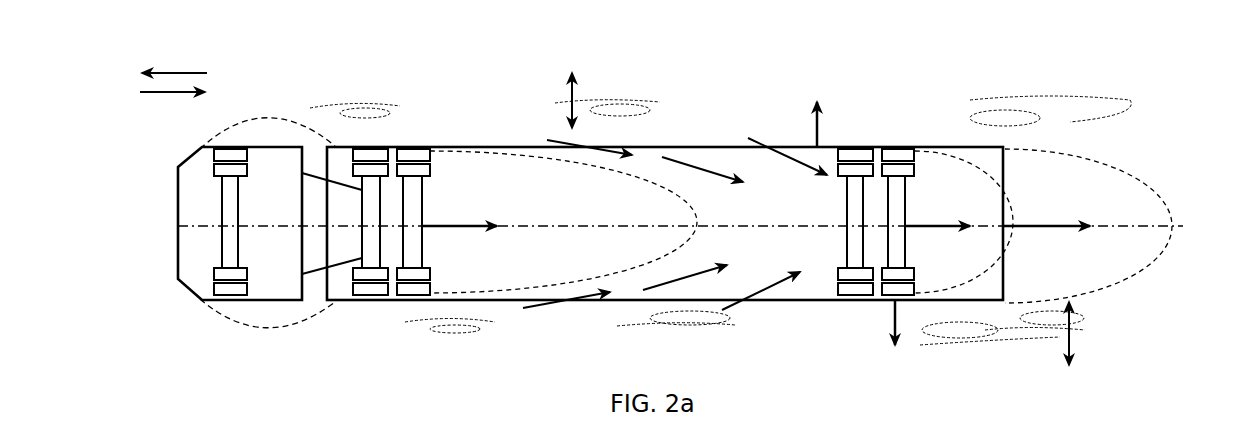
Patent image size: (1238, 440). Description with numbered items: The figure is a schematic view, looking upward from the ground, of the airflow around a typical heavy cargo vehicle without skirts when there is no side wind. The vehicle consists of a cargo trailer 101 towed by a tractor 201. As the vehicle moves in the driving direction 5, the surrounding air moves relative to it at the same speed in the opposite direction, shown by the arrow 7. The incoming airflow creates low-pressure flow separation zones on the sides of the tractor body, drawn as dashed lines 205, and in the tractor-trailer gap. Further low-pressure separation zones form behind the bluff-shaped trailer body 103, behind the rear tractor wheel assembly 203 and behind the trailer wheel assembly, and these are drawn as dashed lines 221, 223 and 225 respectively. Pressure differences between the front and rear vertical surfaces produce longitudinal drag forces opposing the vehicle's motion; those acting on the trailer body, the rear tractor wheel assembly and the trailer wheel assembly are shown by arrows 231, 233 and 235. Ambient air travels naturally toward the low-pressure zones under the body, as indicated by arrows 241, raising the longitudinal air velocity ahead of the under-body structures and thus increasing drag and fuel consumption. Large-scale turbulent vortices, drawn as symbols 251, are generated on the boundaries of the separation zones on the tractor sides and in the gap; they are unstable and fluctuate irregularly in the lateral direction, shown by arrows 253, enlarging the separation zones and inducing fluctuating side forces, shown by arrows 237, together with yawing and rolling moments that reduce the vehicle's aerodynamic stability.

The driving direction 5 is at (174, 58).
The arrow indicating air motion direction 7 is at (172, 107).
The cargo trailer 101 is at (468, 126).
The trailer body 103 is at (350, 302).
The tractor 201 is at (195, 262).
The rear tractor wheel assembly 203 is at (410, 243).
The flow separation zones on tractor sides 205 is at (247, 120).
The separation zone behind trailer body 221 is at (1103, 287).
The separation zone behind rear tractor wheel assembly 223 is at (638, 177).
The separation zone behind trailer wheel assembly 225 is at (990, 263).
The longitudinal drag force on trailer body 231 is at (1046, 213).
The longitudinal drag force on rear tractor wheel assembly 233 is at (459, 212).
The longitudinal drag force on trailer wheel assembly 235 is at (937, 212).
The fluctuating side forces 237 is at (832, 223).
The ambient air inflow arrows 241 is at (675, 224).
The large-scale turbulent vortices 251 is at (977, 112).
The lateral fluctuation arrows 253 is at (826, 214).